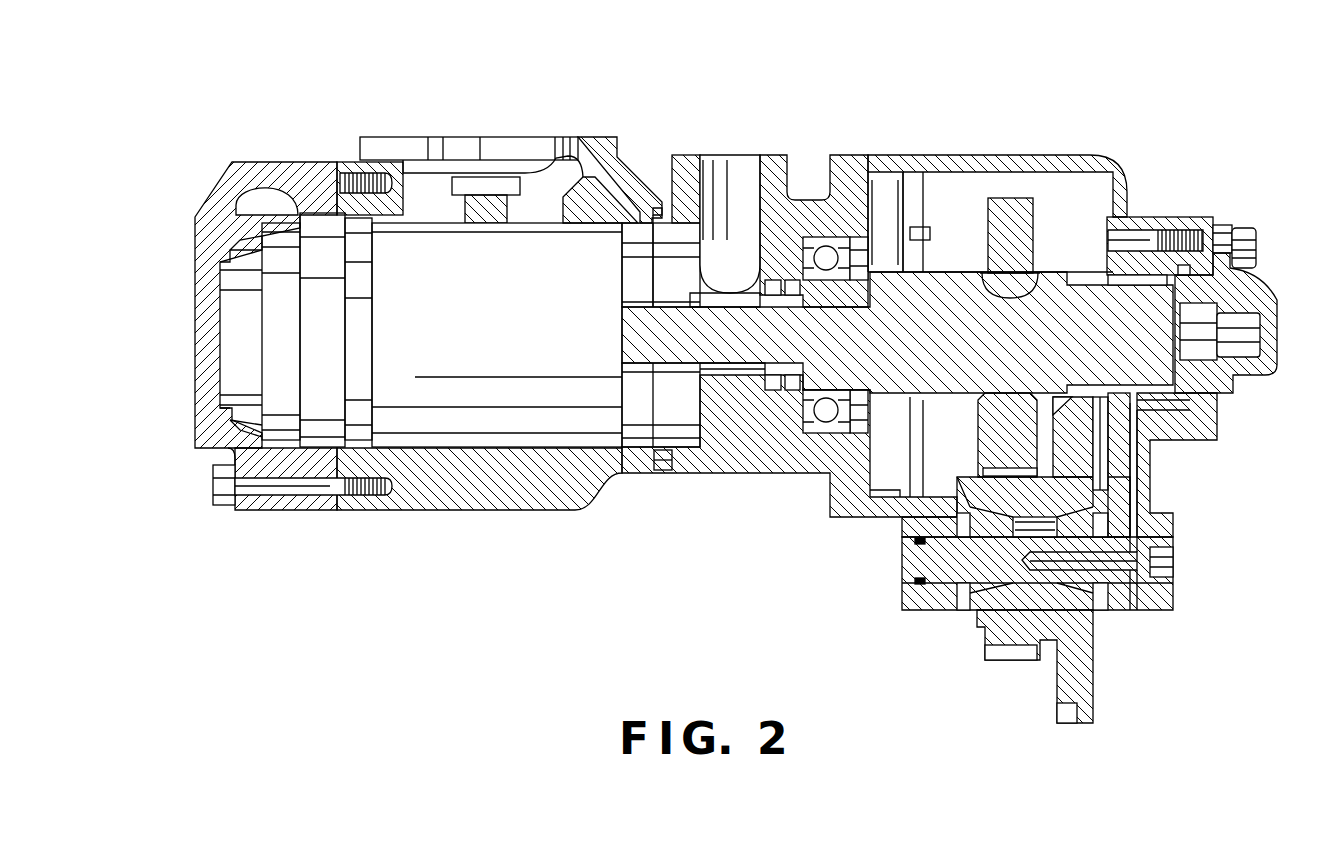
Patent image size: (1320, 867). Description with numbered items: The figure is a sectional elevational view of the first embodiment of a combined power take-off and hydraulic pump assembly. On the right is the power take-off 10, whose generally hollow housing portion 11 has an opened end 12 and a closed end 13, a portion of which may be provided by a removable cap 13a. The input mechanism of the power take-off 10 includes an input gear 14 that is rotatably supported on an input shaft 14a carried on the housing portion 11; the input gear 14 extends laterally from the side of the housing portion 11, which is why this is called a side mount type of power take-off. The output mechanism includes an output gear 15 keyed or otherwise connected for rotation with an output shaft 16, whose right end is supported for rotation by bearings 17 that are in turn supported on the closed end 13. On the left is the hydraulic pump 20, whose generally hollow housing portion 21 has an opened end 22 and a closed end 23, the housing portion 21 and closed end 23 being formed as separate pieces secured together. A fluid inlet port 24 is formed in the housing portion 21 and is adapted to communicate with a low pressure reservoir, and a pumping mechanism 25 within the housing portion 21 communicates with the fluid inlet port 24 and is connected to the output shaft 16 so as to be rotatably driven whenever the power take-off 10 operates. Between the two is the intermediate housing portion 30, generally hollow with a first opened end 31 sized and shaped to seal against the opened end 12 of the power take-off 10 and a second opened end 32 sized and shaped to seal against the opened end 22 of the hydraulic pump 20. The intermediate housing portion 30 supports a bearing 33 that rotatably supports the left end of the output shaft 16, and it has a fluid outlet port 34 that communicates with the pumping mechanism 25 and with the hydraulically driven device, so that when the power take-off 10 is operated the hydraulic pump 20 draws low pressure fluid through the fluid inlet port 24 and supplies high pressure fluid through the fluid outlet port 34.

The power take-off 10 is at (1182, 642).
The housing portion 11 is at (998, 157).
The opened end 12 is at (842, 158).
The closed end 13 is at (1137, 267).
The removable cap 13a is at (1207, 418).
The input gear 14 is at (1082, 683).
The input shaft 14a is at (943, 562).
The output gear 15 is at (1020, 212).
The output shaft 16 is at (962, 297).
The bearings 17 is at (1140, 375).
The hydraulic pump 20 is at (303, 580).
The housing portion 21 is at (469, 492).
The opened end 22 is at (680, 456).
The closed end 23 is at (210, 433).
The fluid inlet port 24 is at (408, 160).
The pumping mechanism 25 is at (459, 328).
The intermediate housing portion 30 is at (735, 528).
The first opened end 31 is at (882, 190).
The second opened end 32 is at (650, 205).
The bearing 33 is at (823, 412).
The fluid outlet port 34 is at (722, 185).